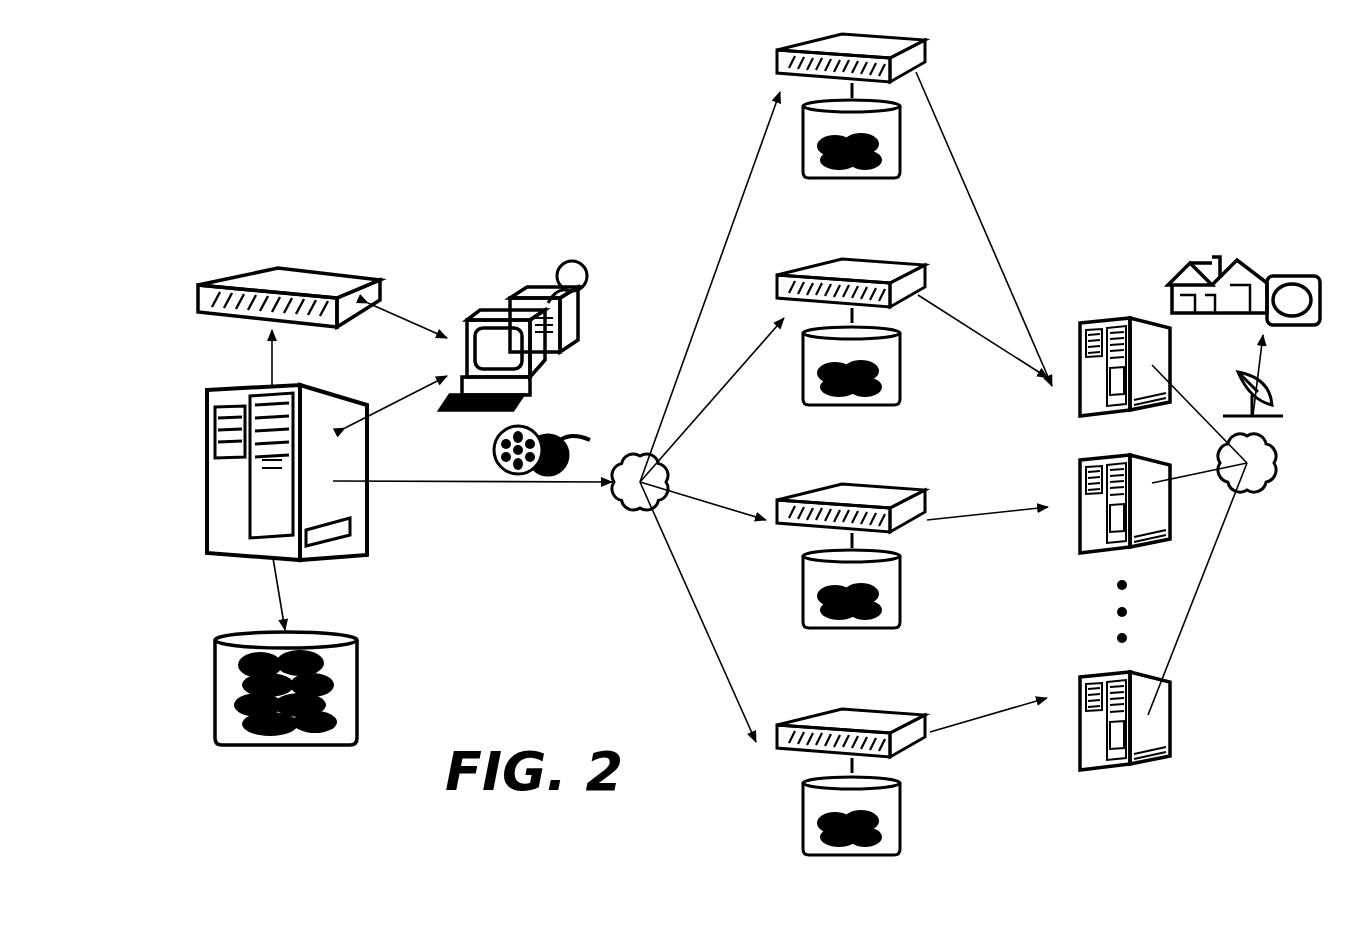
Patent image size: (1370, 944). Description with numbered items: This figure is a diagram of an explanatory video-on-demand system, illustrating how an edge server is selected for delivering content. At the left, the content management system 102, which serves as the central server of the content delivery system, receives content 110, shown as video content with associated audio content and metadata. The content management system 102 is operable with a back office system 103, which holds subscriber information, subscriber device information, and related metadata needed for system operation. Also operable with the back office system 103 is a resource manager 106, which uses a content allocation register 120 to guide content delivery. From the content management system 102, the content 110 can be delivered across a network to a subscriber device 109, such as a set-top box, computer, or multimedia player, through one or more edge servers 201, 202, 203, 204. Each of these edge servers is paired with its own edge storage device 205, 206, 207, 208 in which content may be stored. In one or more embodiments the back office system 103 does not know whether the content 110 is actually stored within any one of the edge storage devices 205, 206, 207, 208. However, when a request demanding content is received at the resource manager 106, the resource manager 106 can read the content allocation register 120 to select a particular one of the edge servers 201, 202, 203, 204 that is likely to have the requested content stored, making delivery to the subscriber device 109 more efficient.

The content management system 102 is at (333, 506).
The back office system 103 is at (335, 283).
The resource manager 106 is at (515, 350).
The subscriber device 109 is at (1291, 275).
The content 110 is at (565, 452).
The content allocation register 120 is at (578, 276).
The edge server 201 is at (913, 57).
The edge server 202 is at (882, 272).
The edge server 203 is at (887, 497).
The edge server 204 is at (885, 722).
The edge storage device 205 is at (808, 178).
The edge storage device 206 is at (809, 403).
The edge storage device 207 is at (808, 628).
The edge storage device 208 is at (807, 802).